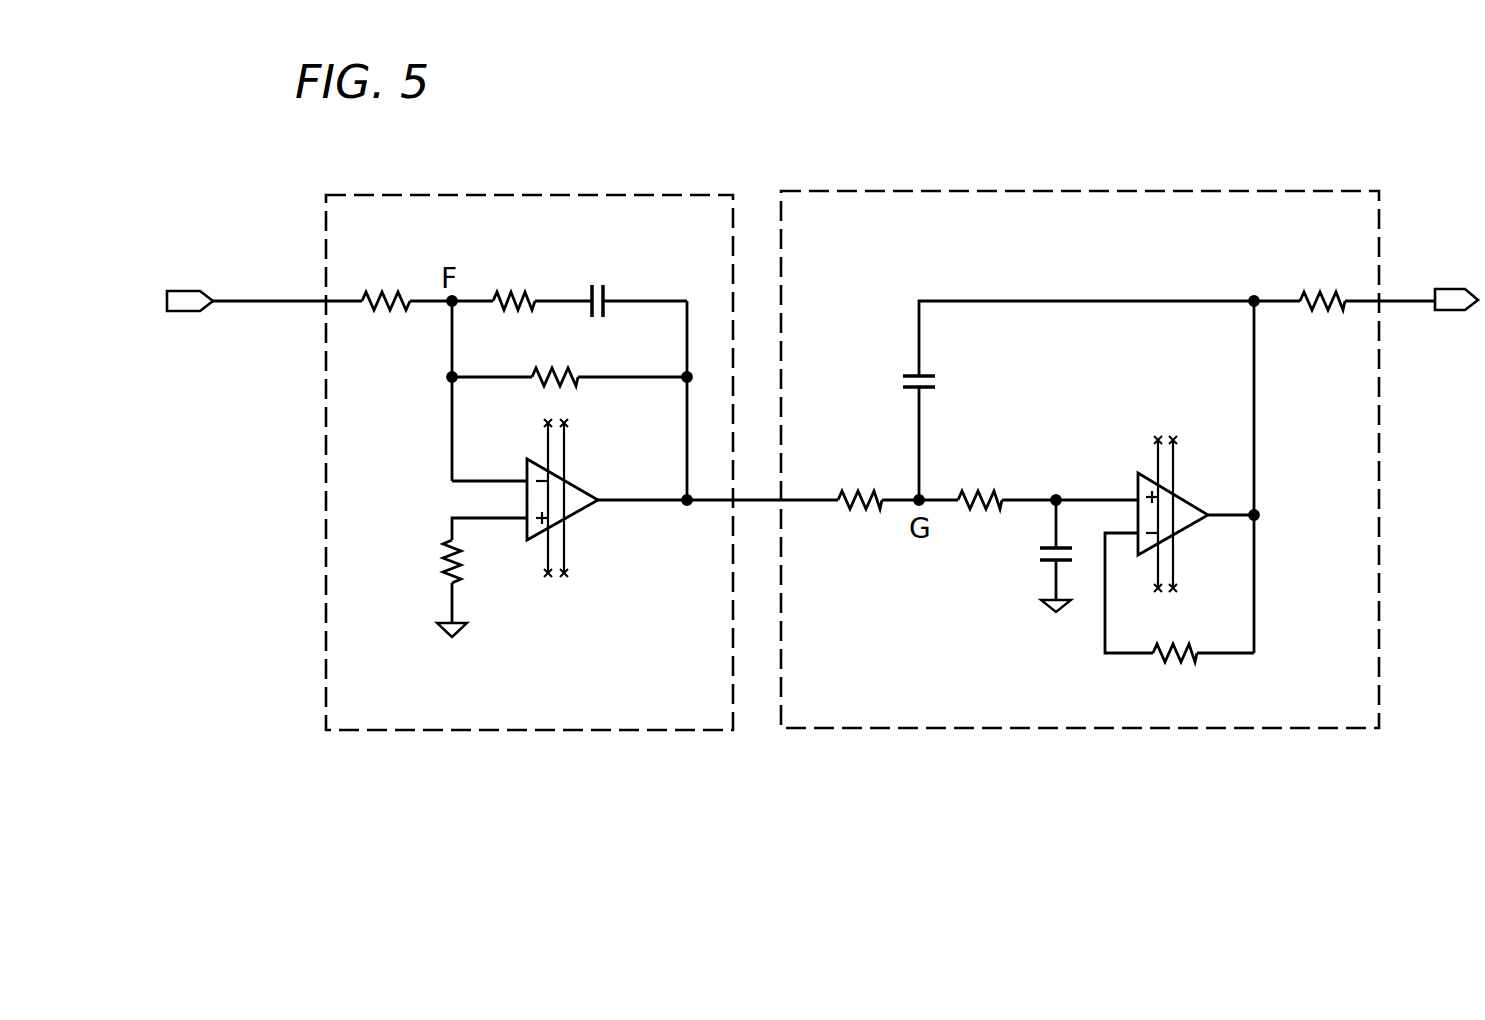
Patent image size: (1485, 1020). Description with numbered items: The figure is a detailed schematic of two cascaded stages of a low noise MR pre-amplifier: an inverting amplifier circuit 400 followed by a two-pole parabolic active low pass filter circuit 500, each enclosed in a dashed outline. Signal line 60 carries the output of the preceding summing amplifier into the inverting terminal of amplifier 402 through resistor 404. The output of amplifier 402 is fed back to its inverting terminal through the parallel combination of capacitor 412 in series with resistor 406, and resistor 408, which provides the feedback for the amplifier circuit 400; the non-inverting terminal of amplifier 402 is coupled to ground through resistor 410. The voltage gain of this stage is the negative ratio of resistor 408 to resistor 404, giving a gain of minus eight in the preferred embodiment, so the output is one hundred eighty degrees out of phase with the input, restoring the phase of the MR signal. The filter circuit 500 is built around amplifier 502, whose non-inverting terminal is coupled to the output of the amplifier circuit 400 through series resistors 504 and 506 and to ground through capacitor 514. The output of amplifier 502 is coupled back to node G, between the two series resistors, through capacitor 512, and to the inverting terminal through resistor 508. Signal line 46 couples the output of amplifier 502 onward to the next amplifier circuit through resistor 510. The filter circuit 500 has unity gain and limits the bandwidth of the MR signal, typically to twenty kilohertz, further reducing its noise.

The signal line 60 is at (202, 313).
The signal line 46 is at (1456, 312).
The amplifier circuit 400 is at (586, 195).
The amplifier 402 is at (578, 490).
The resistor 404 is at (394, 290).
The resistor 406 is at (516, 290).
The resistor 408 is at (557, 367).
The resistor 410 is at (441, 552).
The capacitor 412 is at (606, 284).
The two-pole parabolic active low pass filter circuit 500 is at (1130, 191).
The amplifier 502 is at (1190, 505).
The resistor 504 is at (864, 490).
The resistor 506 is at (985, 490).
The resistor 508 is at (1185, 663).
The resistor 510 is at (1325, 290).
The capacitor 512 is at (934, 373).
The capacitor 514 is at (1038, 556).